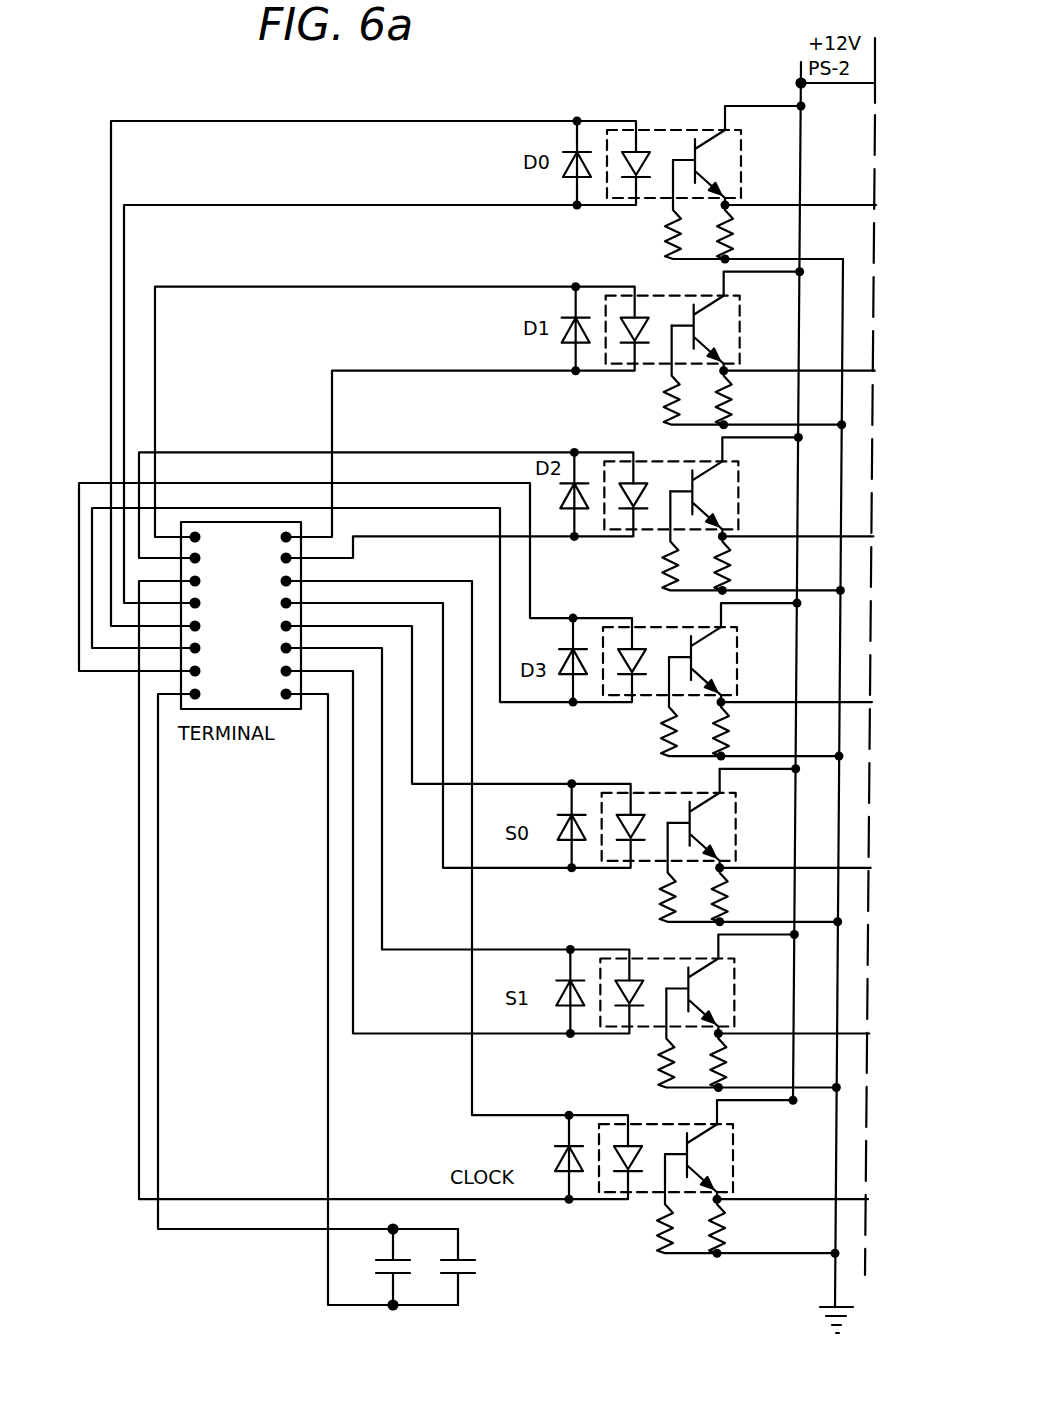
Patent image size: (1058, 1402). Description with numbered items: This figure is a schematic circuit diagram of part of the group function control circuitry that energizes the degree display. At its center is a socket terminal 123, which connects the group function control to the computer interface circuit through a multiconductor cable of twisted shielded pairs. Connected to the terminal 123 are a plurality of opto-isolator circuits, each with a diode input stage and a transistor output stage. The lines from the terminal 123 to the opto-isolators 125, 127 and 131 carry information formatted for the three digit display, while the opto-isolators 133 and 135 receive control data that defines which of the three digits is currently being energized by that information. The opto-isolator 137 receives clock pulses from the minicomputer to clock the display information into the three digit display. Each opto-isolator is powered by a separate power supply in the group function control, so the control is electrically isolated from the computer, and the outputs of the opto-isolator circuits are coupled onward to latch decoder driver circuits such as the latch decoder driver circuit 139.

The socket terminal 123 is at (263, 650).
The opto-isolator circuit 125 is at (773, 185).
The opto-isolator circuit 127 is at (718, 348).
The latch decoder driver circuit 139 is at (716, 514).
The opto-isolator circuit 131 is at (715, 680).
The opto-isolator circuit 133 is at (714, 845).
The opto-isolator circuit 135 is at (712, 1011).
The opto-isolator circuit 137 is at (711, 1177).